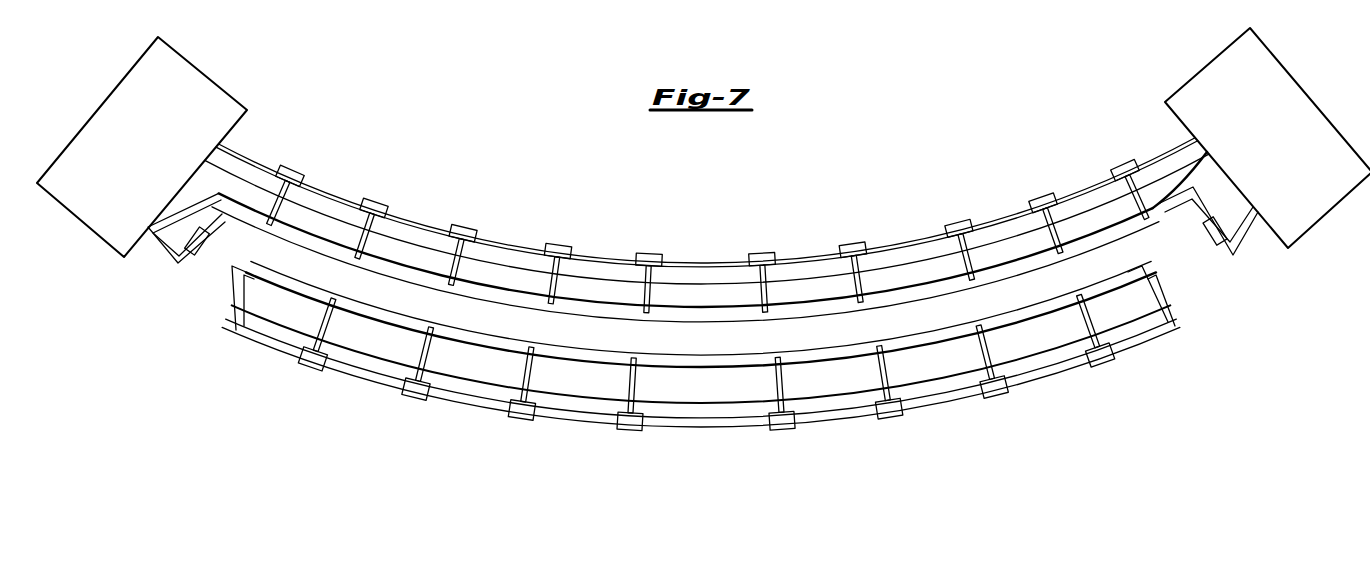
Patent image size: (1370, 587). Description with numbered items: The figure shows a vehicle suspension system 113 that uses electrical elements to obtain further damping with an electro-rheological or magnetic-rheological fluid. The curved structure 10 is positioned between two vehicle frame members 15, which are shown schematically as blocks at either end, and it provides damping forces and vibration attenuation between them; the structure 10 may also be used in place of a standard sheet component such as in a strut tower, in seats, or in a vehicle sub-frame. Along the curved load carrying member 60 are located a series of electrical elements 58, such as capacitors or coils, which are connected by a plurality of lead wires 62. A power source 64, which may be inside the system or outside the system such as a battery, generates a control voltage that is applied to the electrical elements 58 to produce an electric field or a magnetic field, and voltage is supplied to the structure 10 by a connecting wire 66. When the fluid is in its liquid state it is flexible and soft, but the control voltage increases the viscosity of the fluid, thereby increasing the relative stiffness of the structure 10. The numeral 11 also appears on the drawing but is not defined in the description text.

The vehicle suspension system 113 is at (832, 158).
The structure 10 is at (1152, 208).
The second rail 11 is at (1240, 212).
The vehicle frame members 15 is at (115, 133).
The electrical elements 58 is at (291, 167).
The load carrying member 60 is at (1157, 247).
The lead wires 62 is at (318, 192).
The power source 64 is at (999, 398).
The connecting wire 66 is at (324, 325).